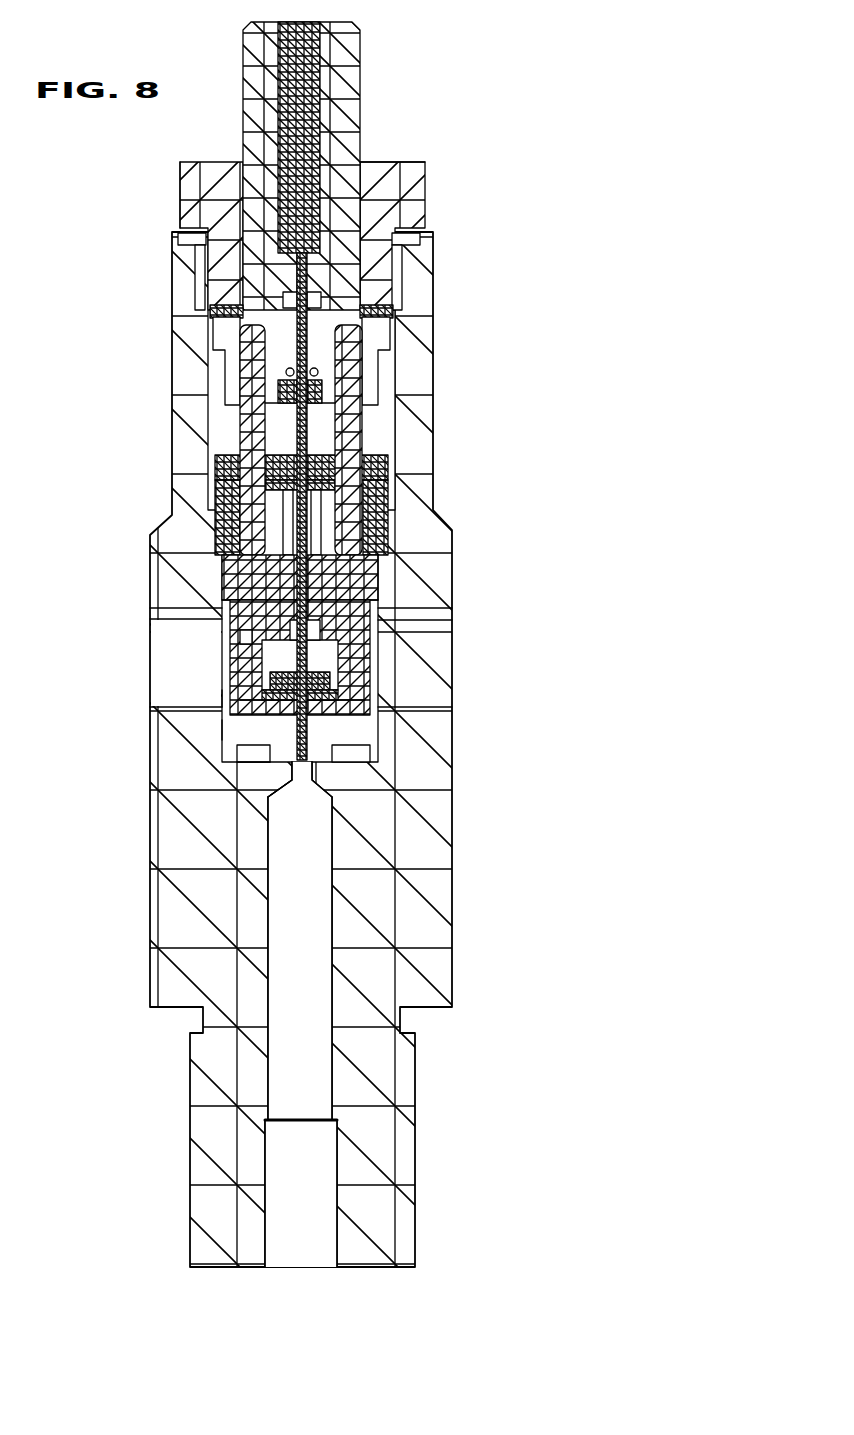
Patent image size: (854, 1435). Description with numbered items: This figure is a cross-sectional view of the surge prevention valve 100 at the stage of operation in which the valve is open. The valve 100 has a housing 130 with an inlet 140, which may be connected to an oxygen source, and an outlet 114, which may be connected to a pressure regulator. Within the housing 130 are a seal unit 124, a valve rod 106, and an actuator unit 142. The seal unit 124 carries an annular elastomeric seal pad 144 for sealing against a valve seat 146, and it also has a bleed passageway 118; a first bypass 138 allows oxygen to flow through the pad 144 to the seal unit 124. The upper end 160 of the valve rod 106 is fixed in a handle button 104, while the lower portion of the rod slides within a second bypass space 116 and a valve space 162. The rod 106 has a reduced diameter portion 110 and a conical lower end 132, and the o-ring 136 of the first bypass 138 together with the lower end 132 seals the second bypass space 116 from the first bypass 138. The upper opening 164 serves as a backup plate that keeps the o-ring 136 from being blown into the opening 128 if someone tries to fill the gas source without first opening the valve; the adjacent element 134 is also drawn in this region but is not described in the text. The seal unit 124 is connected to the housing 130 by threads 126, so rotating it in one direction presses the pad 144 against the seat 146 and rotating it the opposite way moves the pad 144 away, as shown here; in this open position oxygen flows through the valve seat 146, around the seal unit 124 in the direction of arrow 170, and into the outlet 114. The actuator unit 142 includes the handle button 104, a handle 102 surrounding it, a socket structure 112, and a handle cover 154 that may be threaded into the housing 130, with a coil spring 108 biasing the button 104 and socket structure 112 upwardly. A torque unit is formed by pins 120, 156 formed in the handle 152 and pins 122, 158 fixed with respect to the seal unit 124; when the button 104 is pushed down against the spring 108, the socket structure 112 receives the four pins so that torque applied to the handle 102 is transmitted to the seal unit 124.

The valve 100 is at (485, 369).
The handle 102 is at (340, 90).
The handle button 104 is at (298, 60).
The valve rod 106 is at (400, 285).
The coil spring 108 is at (395, 511).
The reduced diameter portion 110 is at (400, 632).
The socket structure 112 is at (395, 486).
The outlet 114 is at (175, 681).
The second bypass space 116 is at (222, 609).
The bleed passageway 118 is at (225, 637).
The pin 120 is at (395, 463).
The pin 122 is at (395, 528).
The seal unit 124 is at (398, 552).
The threads 126 is at (400, 652).
The opening 128 is at (303, 1090).
The housing 130 is at (420, 946).
The lower end 132 is at (400, 757).
The seat 134 is at (400, 712).
The o-ring 136 is at (400, 678).
The first bypass 138 is at (313, 775).
The inlet 140 is at (305, 1240).
The actuator unit 142 is at (412, 190).
The seal pad 144 is at (232, 736).
The valve seat 146 is at (245, 800).
The handle 152 is at (400, 175).
The handle cover 154 is at (200, 197).
The pin 156 is at (212, 455).
The pin 158 is at (215, 492).
The upper end 160 is at (400, 243).
The valve space 162 is at (400, 588).
The upper opening 164 is at (228, 692).
The arrow 170 is at (265, 797).